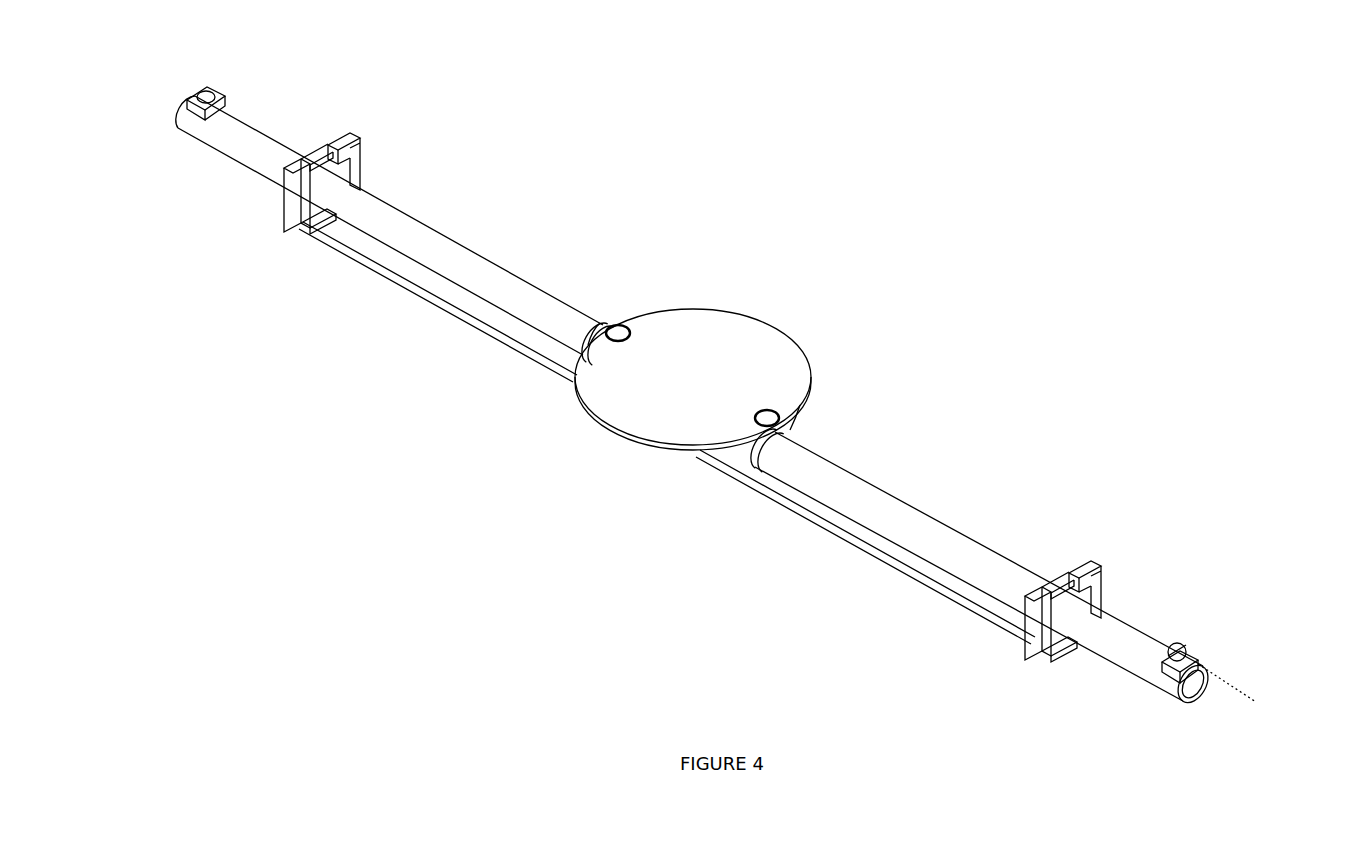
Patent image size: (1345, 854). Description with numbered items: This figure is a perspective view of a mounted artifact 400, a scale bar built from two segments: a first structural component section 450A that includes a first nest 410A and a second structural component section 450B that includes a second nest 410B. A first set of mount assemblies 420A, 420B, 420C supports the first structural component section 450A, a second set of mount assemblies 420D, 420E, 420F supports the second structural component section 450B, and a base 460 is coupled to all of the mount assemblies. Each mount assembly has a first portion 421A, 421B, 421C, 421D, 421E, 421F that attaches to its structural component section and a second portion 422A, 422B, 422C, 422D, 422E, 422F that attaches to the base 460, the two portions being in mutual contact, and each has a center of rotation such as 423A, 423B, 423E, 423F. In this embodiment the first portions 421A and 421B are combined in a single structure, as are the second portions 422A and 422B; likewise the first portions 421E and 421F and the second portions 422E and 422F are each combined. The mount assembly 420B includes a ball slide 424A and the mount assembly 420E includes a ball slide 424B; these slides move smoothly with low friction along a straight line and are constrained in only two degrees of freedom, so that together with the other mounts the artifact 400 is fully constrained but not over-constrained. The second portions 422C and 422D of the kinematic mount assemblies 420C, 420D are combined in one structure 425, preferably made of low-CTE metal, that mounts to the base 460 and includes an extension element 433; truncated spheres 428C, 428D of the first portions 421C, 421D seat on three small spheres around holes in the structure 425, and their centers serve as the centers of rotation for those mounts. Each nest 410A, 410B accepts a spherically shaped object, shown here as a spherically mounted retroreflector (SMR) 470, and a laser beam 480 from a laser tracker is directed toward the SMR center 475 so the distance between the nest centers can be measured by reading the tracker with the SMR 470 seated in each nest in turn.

The mounted artifact 400 is at (706, 86).
The first nest 410A is at (222, 93).
The second nest 410B is at (1150, 654).
The mount assembly 420A is at (448, 102).
The mount assembly 420B is at (195, 266).
The mount assembly 420C is at (665, 240).
The mount assembly 420D is at (912, 348).
The mount assembly 420E is at (1184, 532).
The mount assembly 420F is at (950, 683).
The first portion 421A is at (353, 130).
The first portion 421B is at (283, 168).
The first portion 421C is at (596, 302).
The first portion 421D is at (824, 423).
The first portion 421E is at (1115, 552).
The first portion 421F is at (985, 596).
The second portion 422A is at (362, 170).
The second portion 422B is at (281, 200).
The second portion 422C is at (651, 311).
The second portion 422D is at (800, 349).
The second portion 422E is at (1137, 592).
The second portion 422F is at (1004, 638).
The center of rotation 423A is at (362, 138).
The center of rotation 423B is at (282, 178).
The center of rotation 423E is at (1120, 573).
The center of rotation 423F is at (992, 621).
The ball slide 424A is at (325, 228).
The ball slide 424B is at (1046, 668).
The structure 425 is at (752, 288).
The truncated sphere 428C is at (618, 324).
The truncated sphere 428D is at (781, 411).
The extension element 433 is at (763, 321).
The first structural component section 450A is at (465, 240).
The second structural component section 450B is at (887, 533).
The base 460 is at (535, 364).
The spherically mounted retroreflector (SMR) 470 is at (1174, 648).
The SMR center 475 is at (1187, 654).
The laser beam 480 is at (1240, 684).